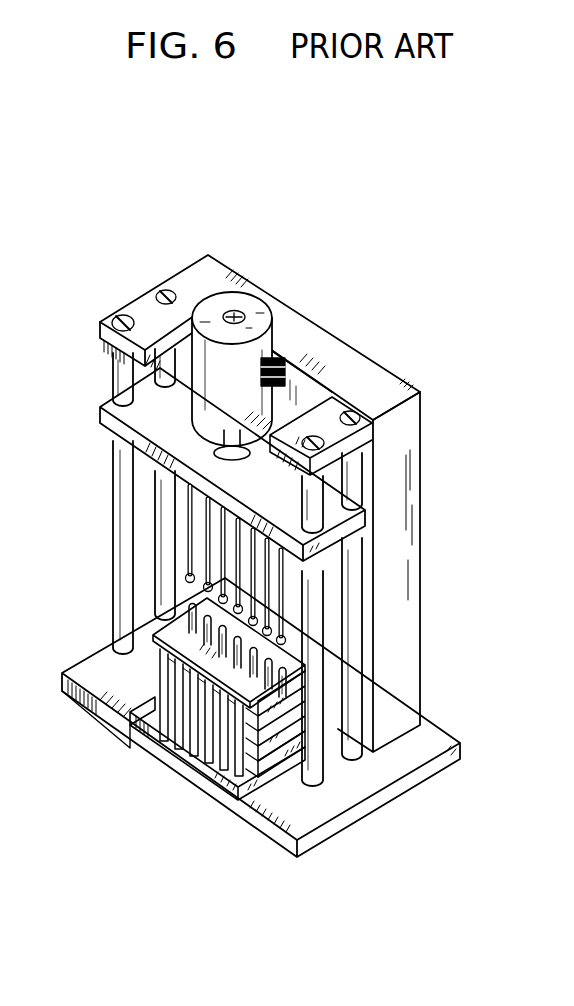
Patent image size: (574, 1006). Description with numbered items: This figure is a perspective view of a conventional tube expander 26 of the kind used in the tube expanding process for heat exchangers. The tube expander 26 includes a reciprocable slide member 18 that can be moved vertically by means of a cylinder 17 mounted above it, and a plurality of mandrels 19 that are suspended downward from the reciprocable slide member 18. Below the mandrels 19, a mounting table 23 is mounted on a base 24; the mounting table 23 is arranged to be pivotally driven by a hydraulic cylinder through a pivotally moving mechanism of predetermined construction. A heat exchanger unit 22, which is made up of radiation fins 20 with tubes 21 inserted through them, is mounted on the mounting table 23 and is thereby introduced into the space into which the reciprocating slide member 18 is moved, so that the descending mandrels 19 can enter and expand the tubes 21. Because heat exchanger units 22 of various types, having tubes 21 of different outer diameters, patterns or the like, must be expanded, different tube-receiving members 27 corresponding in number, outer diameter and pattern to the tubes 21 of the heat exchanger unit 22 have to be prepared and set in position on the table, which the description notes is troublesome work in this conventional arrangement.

The cylinder 17 is at (262, 350).
The reciprocable slide member 18 is at (150, 428).
The mandrels 19 is at (250, 548).
The radiation fins 20 is at (160, 668).
The tubes 21 is at (158, 738).
The heat exchanger unit 22 is at (318, 688).
The mounting table 23 is at (195, 757).
The base 24 is at (262, 826).
The tube expander 26 is at (380, 364).
The tube-receiving members 27 is at (290, 745).